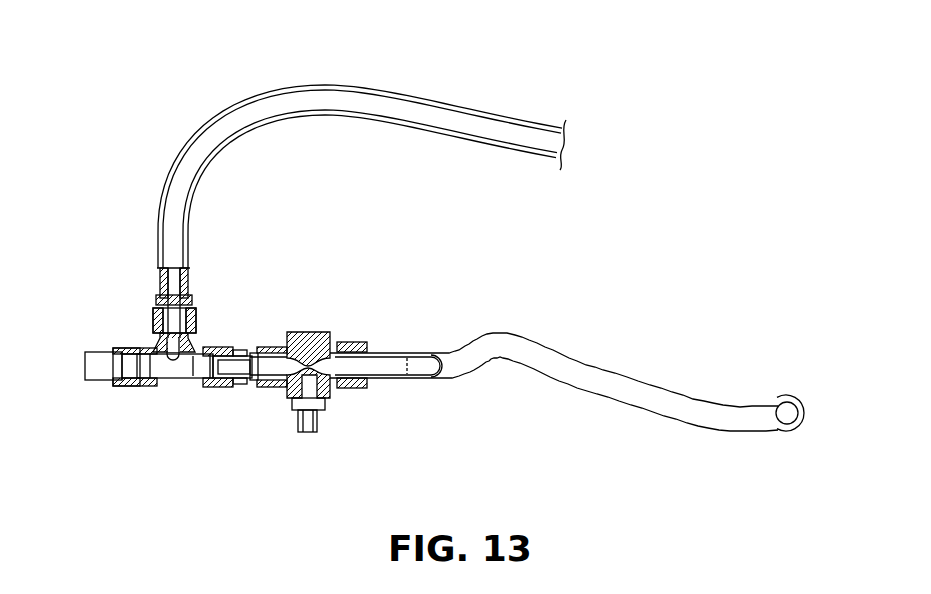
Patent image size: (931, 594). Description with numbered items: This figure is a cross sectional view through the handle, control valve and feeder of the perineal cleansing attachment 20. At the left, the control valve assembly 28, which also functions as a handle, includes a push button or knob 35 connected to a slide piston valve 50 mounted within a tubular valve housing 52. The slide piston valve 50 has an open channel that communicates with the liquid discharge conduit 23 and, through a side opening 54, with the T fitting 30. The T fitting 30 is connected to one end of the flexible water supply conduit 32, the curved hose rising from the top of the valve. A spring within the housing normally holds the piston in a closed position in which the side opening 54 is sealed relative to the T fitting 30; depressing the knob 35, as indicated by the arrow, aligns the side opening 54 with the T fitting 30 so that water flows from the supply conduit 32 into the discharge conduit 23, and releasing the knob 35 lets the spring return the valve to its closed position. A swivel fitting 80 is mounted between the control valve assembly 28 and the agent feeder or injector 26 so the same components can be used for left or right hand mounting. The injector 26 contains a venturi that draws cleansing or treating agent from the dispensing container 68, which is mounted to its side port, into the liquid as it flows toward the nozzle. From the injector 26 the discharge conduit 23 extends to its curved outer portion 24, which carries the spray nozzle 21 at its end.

The perineal cleansing attachment 20 is at (158, 411).
The spray nozzle 21 is at (790, 397).
The liquid discharge conduit 23 is at (648, 419).
The curved outer portion 24 is at (743, 425).
The agent feeder or injector 26 is at (315, 332).
The control valve assembly 28 is at (140, 385).
The T fitting 30 is at (200, 326).
The flexible water supply conduit 32 is at (440, 103).
The push button or knob 35 is at (98, 372).
The slide piston valve 50 is at (172, 373).
The tubular valve housing 52 is at (150, 350).
The side opening 54 is at (156, 346).
The dispensing container 68 is at (302, 410).
The swivel fitting 80 is at (240, 385).